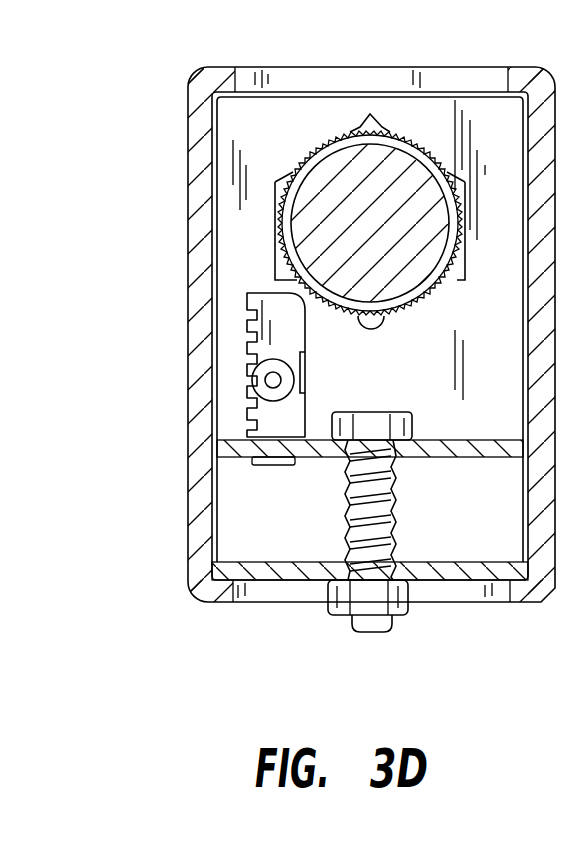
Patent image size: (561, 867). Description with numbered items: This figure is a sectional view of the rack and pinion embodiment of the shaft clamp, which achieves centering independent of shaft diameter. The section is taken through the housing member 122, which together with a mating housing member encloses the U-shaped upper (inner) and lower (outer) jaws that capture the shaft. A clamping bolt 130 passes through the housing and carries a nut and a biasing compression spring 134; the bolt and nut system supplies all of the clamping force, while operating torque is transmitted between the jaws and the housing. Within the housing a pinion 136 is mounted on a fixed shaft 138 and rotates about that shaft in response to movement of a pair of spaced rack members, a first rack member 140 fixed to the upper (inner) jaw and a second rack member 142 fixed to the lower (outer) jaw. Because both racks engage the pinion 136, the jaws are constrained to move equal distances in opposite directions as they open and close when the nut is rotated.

The housing member 122 is at (310, 118).
The clamping bolt 130 is at (386, 413).
The biasing compression spring 134 is at (394, 497).
The pinion 136 is at (254, 380).
The fixed shaft 138 is at (268, 387).
The rack member 140 is at (247, 321).
The rack member 142 is at (304, 403).